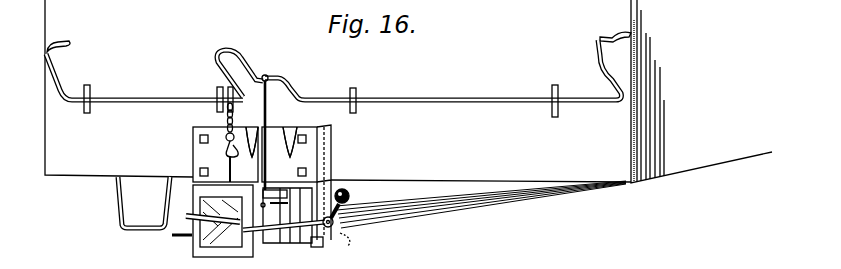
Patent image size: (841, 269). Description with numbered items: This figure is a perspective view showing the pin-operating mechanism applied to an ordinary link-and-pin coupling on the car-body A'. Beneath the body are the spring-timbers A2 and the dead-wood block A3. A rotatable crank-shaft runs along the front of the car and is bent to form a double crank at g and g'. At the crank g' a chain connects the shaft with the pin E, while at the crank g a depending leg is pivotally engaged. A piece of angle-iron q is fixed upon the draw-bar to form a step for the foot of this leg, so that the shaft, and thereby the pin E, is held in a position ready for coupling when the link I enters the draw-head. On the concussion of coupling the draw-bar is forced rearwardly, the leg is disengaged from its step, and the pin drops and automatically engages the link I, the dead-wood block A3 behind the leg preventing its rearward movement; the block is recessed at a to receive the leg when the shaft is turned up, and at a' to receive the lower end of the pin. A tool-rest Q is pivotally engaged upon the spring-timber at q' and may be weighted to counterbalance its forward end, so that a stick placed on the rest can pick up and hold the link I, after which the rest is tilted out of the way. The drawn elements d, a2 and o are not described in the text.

The operating rod d is at (333, 78).
The crank of the crank-shaft g' is at (240, 66).
The crank of the crank-shaft g is at (272, 124).
The pin E is at (236, 142).
The dead-wood block A3 is at (262, 182).
The recess in dead-wood block a is at (282, 131).
The recess in dead-wood block a' is at (250, 131).
The pendant hook a2 is at (283, 129).
The link I is at (211, 221).
The piece of angle-iron q is at (282, 198).
The pin o is at (259, 208).
The tool-rest Q is at (305, 229).
The spring-timbers A2 is at (355, 194).
The pivot of tool-rest q' is at (330, 249).
The car-body A' is at (460, 85).